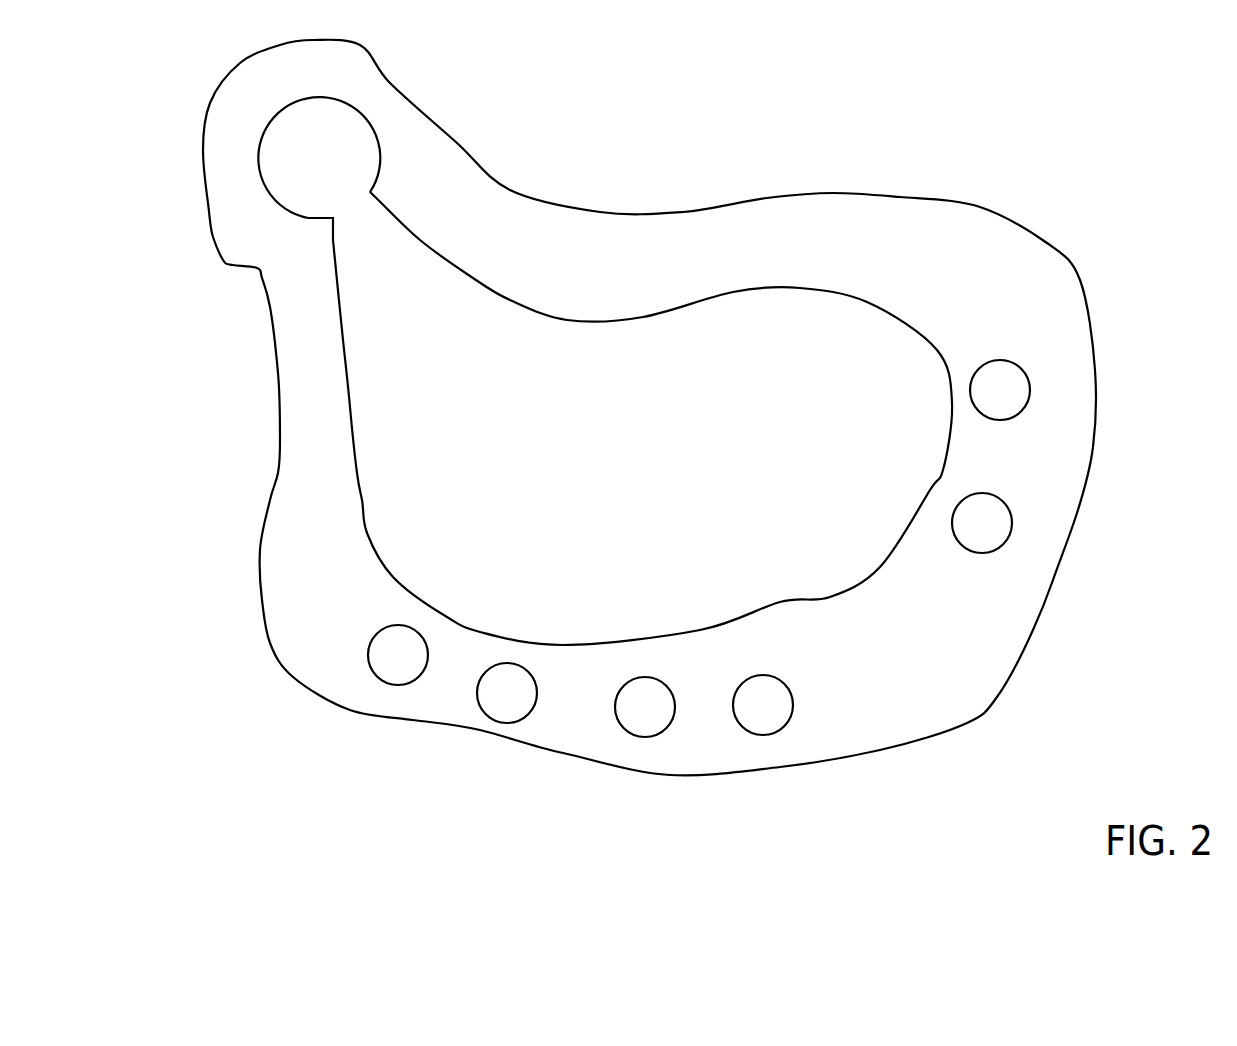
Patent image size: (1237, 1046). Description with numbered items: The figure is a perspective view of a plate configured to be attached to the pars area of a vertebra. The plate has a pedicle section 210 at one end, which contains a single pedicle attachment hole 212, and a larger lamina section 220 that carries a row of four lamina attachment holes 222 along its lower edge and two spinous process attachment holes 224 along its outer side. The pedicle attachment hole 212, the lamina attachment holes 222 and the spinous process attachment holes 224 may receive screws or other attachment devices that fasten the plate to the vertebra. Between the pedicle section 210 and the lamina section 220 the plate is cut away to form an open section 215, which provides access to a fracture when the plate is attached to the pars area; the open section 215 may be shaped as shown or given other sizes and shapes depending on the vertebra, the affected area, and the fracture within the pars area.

The pedicle section 210 is at (383, 83).
The pedicle attachment hole 212 is at (312, 162).
The open section 215 is at (598, 363).
The lamina section 220 is at (895, 705).
The lamina attachment holes 222 is at (398, 687).
The spinous process attachment holes 224 is at (1013, 523).